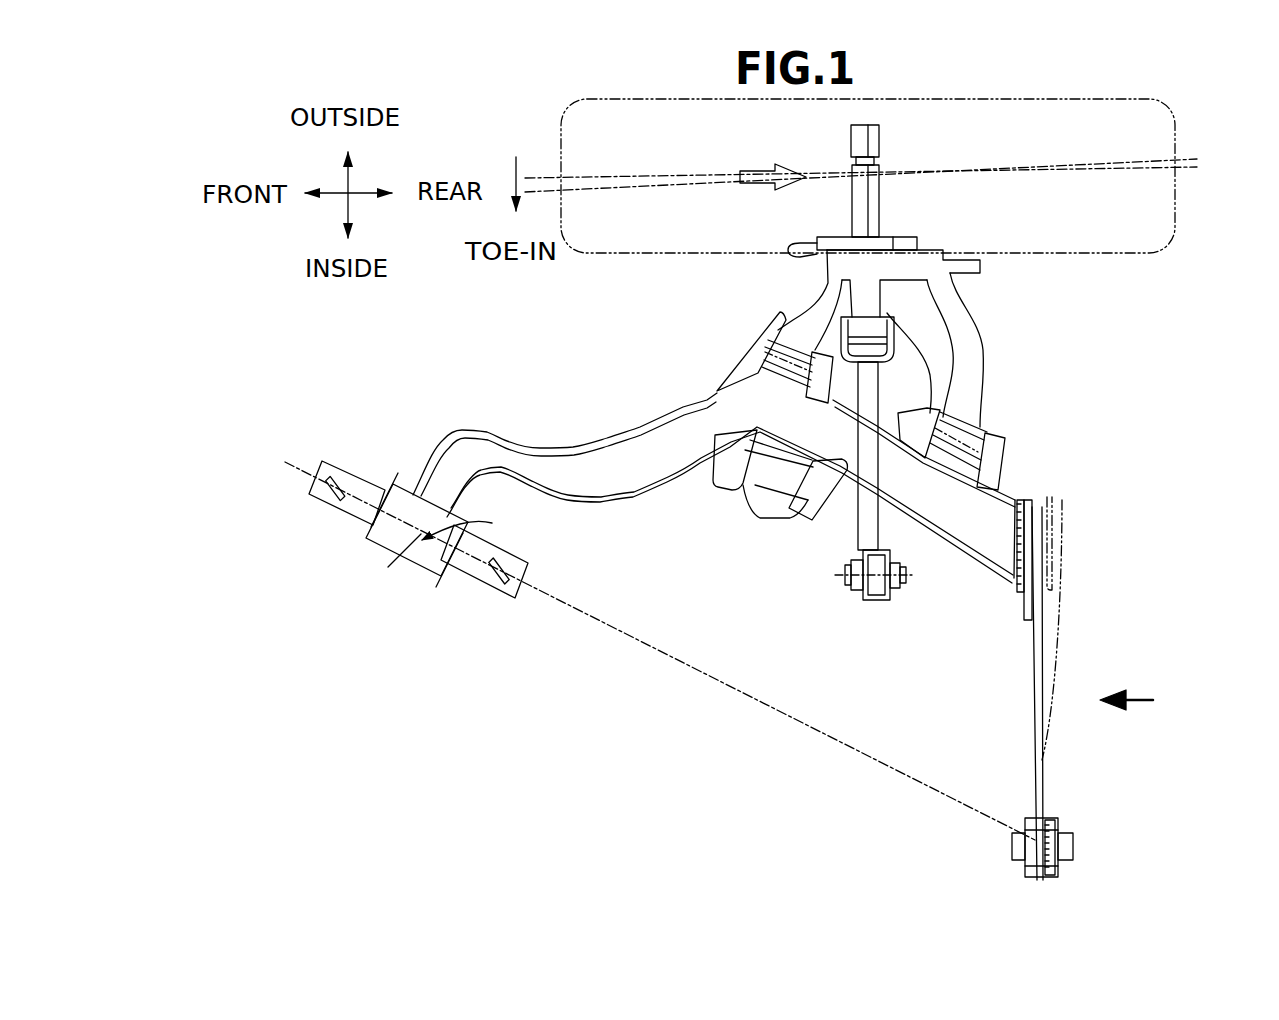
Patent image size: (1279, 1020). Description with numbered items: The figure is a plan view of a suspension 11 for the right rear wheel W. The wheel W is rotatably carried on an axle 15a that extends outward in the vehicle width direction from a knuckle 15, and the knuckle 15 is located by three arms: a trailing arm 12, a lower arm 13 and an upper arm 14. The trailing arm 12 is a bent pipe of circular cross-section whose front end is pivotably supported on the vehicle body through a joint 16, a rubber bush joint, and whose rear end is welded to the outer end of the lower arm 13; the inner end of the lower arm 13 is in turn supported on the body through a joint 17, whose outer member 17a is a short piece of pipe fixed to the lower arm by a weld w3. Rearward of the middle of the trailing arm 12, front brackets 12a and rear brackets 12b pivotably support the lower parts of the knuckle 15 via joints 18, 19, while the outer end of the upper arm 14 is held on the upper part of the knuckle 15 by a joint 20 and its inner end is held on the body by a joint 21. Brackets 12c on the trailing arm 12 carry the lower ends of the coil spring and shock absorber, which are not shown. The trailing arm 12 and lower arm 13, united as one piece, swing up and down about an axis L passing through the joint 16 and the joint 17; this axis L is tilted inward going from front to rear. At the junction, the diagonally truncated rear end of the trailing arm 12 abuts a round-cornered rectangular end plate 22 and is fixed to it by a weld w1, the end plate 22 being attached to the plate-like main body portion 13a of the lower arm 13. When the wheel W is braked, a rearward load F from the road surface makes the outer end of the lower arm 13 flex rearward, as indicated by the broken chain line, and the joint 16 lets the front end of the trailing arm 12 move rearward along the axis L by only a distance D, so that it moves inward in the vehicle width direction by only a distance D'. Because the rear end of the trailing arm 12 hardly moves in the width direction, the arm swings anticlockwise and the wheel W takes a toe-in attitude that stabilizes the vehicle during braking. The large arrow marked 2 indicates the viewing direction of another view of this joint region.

The suspension 11 is at (722, 507).
The trailing arm 12 is at (643, 502).
The front brackets 12a is at (775, 342).
The rear brackets 12b is at (975, 443).
The brackets 12c is at (780, 492).
The lower arm 13 is at (1049, 667).
The main body portion 13a is at (1036, 700).
The upper arm 14 is at (856, 509).
The knuckle 15 is at (978, 339).
The axle 15a is at (868, 207).
The joint 16 is at (405, 480).
The joint 17 is at (1059, 823).
The outer member 17a is at (1031, 820).
The joint 18 is at (786, 374).
The joint 19 is at (949, 459).
The joint 20 is at (899, 359).
The joint 21 is at (847, 596).
The end plate 22 is at (1025, 496).
The wheel W is at (1078, 242).
The weld w1 is at (1017, 523).
The weld w3 is at (1060, 863).
The rearward load F is at (773, 166).
The axis L is at (666, 650).
The distance D is at (467, 524).
The distance D' is at (390, 565).
The view direction arrow 2 is at (1145, 702).